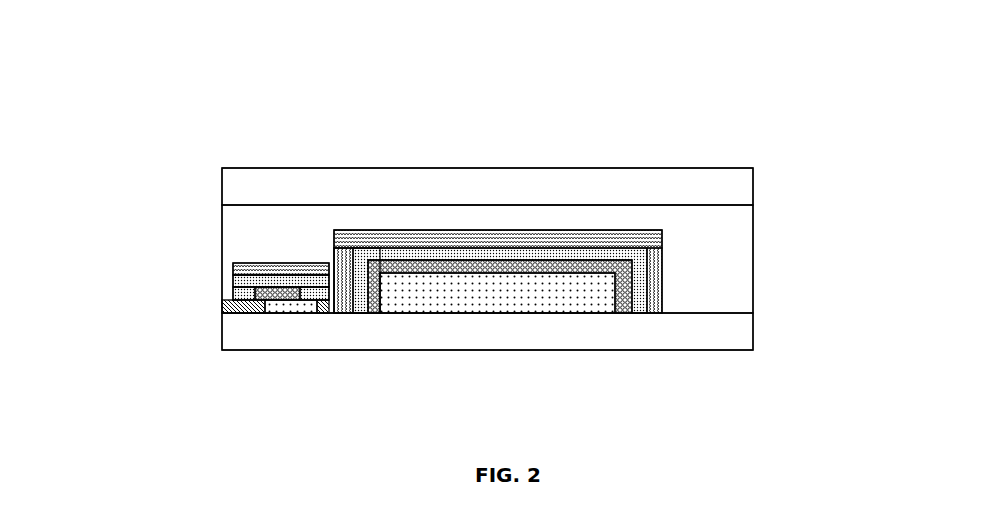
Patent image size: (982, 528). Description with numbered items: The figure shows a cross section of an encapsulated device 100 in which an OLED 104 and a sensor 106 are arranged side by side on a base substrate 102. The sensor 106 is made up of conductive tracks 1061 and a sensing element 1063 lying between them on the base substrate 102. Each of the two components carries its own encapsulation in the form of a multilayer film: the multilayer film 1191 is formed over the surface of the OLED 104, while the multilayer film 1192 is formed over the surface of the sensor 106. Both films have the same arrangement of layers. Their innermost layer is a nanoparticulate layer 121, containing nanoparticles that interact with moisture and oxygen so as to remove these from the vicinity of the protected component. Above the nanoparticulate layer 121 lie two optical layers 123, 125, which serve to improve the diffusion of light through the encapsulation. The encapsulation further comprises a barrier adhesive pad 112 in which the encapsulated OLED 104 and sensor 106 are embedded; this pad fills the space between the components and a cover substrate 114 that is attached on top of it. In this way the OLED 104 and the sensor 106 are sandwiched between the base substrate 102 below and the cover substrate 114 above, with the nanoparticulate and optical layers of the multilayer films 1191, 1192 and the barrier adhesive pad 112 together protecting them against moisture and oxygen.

The encapsulated device 100 is at (377, 92).
The base substrate 102 is at (754, 335).
The OLED 104 is at (493, 297).
The sensor 106 is at (338, 432).
The conductive tracks 1061 is at (322, 314).
The sensing element 1063 is at (297, 313).
The barrier adhesive pad 112 is at (754, 237).
The cover substrate 114 is at (754, 182).
The multilayer film 1191 is at (380, 317).
The multilayer film 1192 is at (118, 217).
The nanoparticulate layer 121 is at (232, 292).
The optical layer 123 is at (232, 283).
The optical layer 125 is at (232, 268).